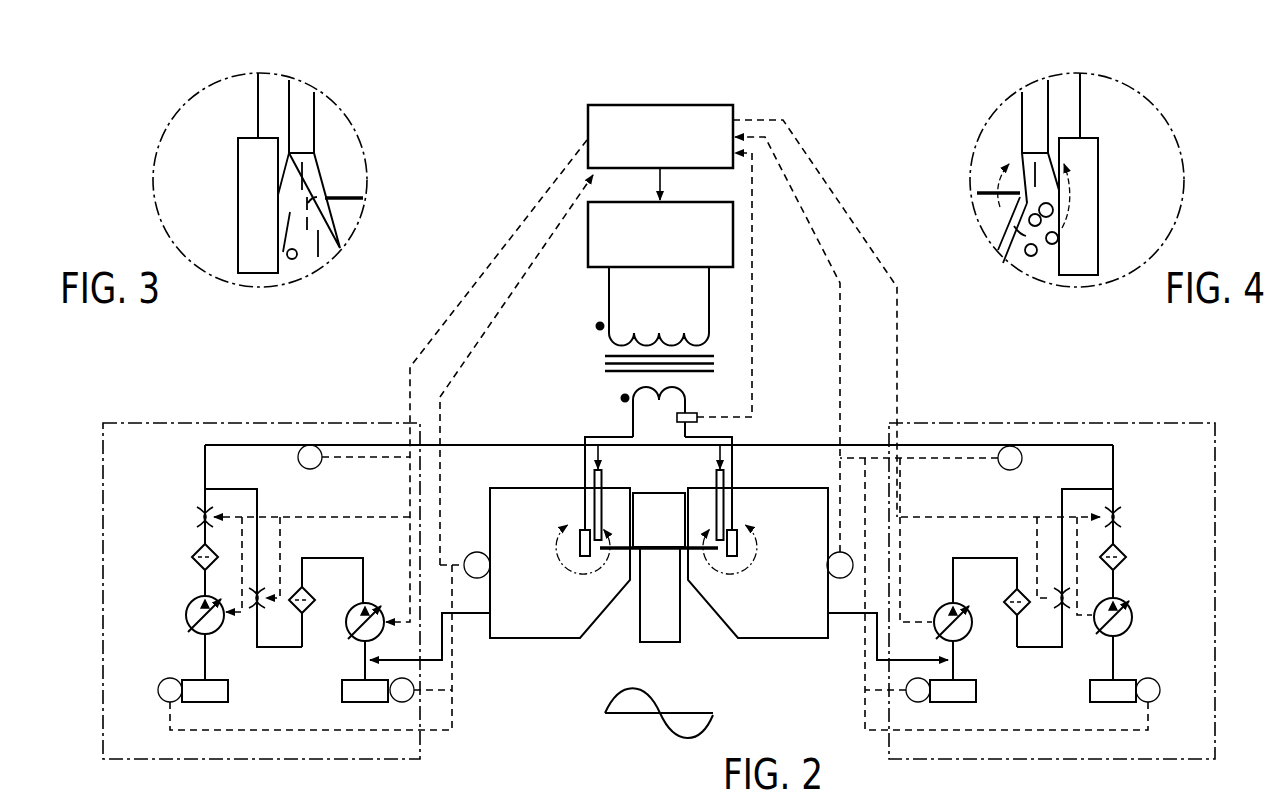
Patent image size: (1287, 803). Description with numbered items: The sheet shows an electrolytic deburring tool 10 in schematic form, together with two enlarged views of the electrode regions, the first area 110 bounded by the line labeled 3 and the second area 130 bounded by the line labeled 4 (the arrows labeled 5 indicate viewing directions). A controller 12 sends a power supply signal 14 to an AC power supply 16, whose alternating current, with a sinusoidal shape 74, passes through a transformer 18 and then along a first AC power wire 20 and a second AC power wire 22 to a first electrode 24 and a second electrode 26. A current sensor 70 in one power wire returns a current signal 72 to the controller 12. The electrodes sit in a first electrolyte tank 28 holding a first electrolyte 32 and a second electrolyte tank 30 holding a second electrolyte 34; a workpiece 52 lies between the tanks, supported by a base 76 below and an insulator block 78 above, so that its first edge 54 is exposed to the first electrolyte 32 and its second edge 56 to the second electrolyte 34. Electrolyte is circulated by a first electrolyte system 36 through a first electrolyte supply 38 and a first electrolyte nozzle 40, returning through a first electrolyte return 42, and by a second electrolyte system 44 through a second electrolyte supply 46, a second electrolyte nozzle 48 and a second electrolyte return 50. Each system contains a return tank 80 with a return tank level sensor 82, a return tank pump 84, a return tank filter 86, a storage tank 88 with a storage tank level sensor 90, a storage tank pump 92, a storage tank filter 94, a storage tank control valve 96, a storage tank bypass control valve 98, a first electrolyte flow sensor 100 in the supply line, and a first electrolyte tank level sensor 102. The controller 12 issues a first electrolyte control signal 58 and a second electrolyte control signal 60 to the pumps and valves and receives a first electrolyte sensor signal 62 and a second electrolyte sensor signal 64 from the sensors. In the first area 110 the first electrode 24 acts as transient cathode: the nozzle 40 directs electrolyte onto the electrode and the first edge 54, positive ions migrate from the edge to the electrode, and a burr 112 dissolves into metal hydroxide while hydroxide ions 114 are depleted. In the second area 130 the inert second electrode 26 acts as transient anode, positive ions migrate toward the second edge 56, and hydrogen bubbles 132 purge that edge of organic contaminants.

In FIG. 2, the electrolytic deburring tool 10 is at (786, 82).
In FIG. 2, the controller 12 is at (660, 105).
In FIG. 2, the power supply signal 14 is at (663, 186).
In FIG. 2, the AC power supply 16 is at (588, 258).
In FIG. 2, the transformer 18 is at (592, 365).
In FIG. 2, the first AC power wire 20 is at (613, 437).
In FIG. 3, the first AC power wire 20 is at (258, 105).
In FIG. 2, the second AC power wire 22 is at (726, 437).
In FIG. 4, the second AC power wire 22 is at (1080, 100).
In FIG. 2, the first electrode 24 is at (585, 557).
In FIG. 3, the first electrode 24 is at (248, 200).
In FIG. 2, the second electrode 26 is at (733, 557).
In FIG. 4, the second electrode 26 is at (1091, 223).
In FIG. 2, the first electrolyte tank 28 is at (560, 638).
In FIG. 2, the second electrolyte tank 30 is at (760, 638).
In FIG. 2, the first electrolyte 32 is at (560, 563).
In FIG. 3, the first electrolyte 32 is at (293, 173).
In FIG. 2, the second electrolyte 34 is at (758, 563).
In FIG. 4, the second electrolyte 34 is at (1028, 165).
In FIG. 2, the first electrolyte system 36 is at (343, 760).
In FIG. 2, the first electrolyte supply 38 is at (503, 447).
In FIG. 2, the first electrolyte nozzle 40 is at (594, 479).
In FIG. 3, the first electrolyte nozzle 40 is at (316, 128).
In FIG. 2, the first electrolyte return 42 is at (444, 663).
In FIG. 2, the second electrolyte system 44 is at (1105, 760).
In FIG. 2, the second electrolyte supply 46 is at (784, 448).
In FIG. 2, the second electrolyte nozzle 48 is at (724, 479).
In FIG. 4, the second electrolyte nozzle 48 is at (1021, 100).
In FIG. 2, the second electrolyte return 50 is at (884, 610).
In FIG. 2, the workpiece 52 is at (680, 553).
In FIG. 3, the workpiece 52 is at (346, 203).
In FIG. 4, the workpiece 52 is at (983, 189).
In FIG. 3, the first edge 54 is at (328, 190).
In FIG. 4, the second edge 56 is at (1010, 198).
In FIG. 2, the first electrolyte control signal 58 is at (498, 253).
In FIG. 2, the second electrolyte control signal 60 is at (843, 203).
In FIG. 2, the first electrolyte sensor signal 62 is at (480, 340).
In FIG. 2, the second electrolyte sensor signal 64 is at (823, 252).
In FIG. 2, the current sensor 70 is at (692, 413).
In FIG. 2, the current signal 72 is at (753, 345).
In FIG. 2, the shape of the AC 74 is at (646, 730).
In FIG. 2, the base 76 is at (657, 630).
In FIG. 2, the insulator block 78 is at (660, 493).
In FIG. 2, the return tank 80 is at (342, 692).
In FIG. 2, the return tank level sensor 82 is at (409, 703).
In FIG. 2, the return tank pump 84 is at (372, 603).
In FIG. 2, the return tank filter 86 is at (292, 598).
In FIG. 2, the storage tank 88 is at (229, 692).
In FIG. 2, the storage tank level sensor 90 is at (164, 680).
In FIG. 2, the storage tank pump 92 is at (186, 615).
In FIG. 2, the storage tank filter 94 is at (193, 561).
In FIG. 2, the storage tank control valve 96 is at (201, 513).
In FIG. 2, the storage tank bypass control valve 98 is at (263, 604).
In FIG. 2, the first electrolyte flow sensor 100 is at (321, 466).
In FIG. 2, the first electrolyte tank level sensor 102 is at (475, 552).
In FIG. 3, the first area 110 is at (323, 58).
In FIG. 3, the burr 112 is at (320, 173).
In FIG. 4, the burr 112 is at (1009, 243).
In FIG. 3, the hydroxide ions 114 is at (331, 244).
In FIG. 4, the second area 130 is at (1161, 75).
In FIG. 4, the hydrogen bubbles 132 is at (1050, 246).
In FIG. 2, the section line 3- 3 is at (591, 533).
In FIG. 2, the section line 4- 4 is at (724, 533).
In FIG. 4, the view direction FIG. 5 is at (1036, 184).